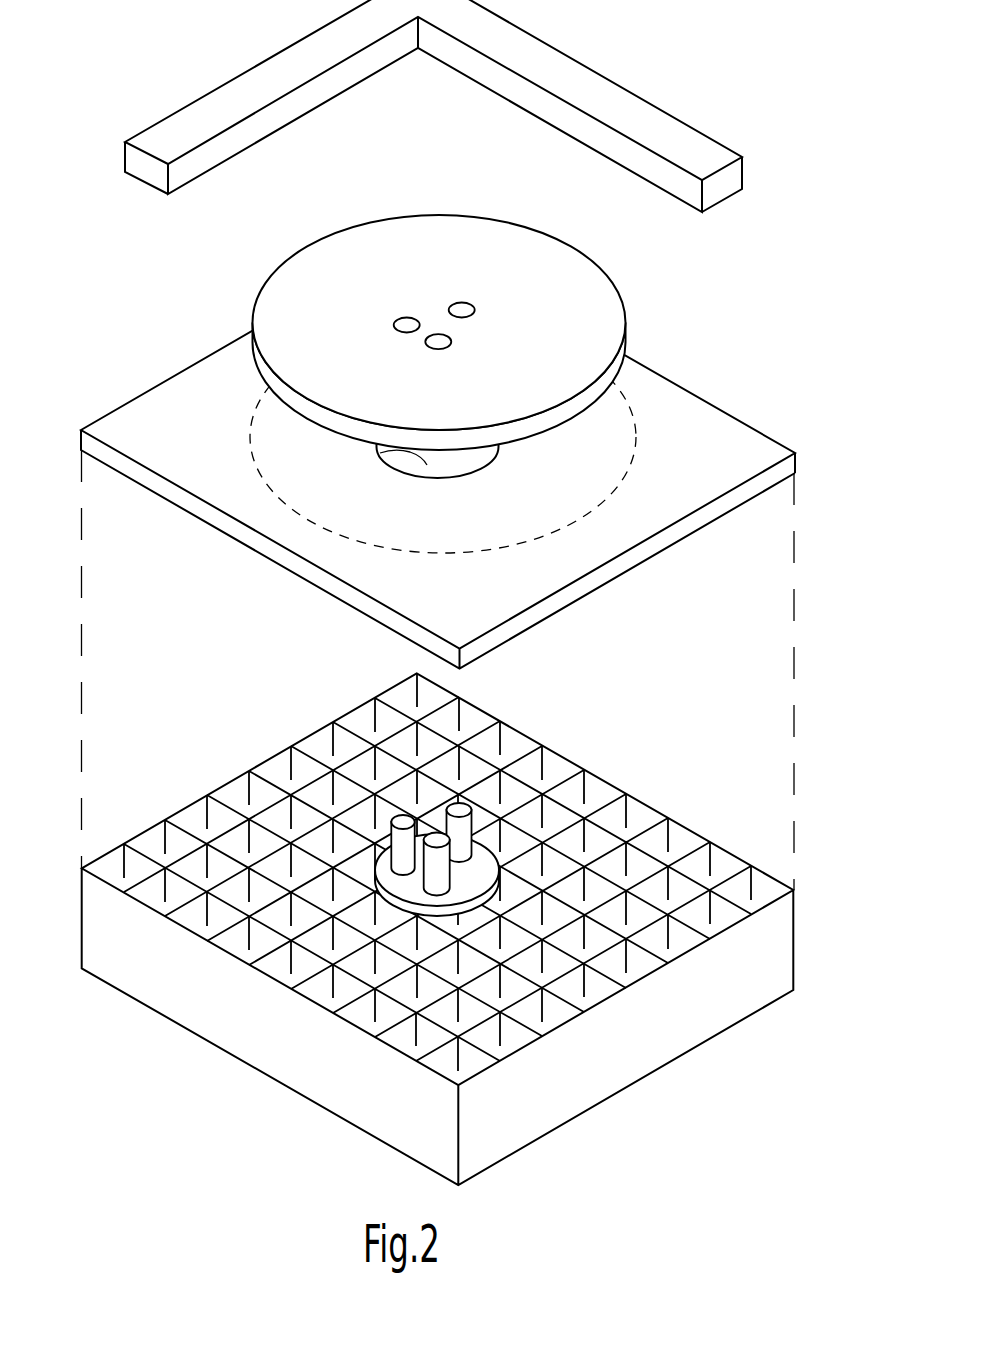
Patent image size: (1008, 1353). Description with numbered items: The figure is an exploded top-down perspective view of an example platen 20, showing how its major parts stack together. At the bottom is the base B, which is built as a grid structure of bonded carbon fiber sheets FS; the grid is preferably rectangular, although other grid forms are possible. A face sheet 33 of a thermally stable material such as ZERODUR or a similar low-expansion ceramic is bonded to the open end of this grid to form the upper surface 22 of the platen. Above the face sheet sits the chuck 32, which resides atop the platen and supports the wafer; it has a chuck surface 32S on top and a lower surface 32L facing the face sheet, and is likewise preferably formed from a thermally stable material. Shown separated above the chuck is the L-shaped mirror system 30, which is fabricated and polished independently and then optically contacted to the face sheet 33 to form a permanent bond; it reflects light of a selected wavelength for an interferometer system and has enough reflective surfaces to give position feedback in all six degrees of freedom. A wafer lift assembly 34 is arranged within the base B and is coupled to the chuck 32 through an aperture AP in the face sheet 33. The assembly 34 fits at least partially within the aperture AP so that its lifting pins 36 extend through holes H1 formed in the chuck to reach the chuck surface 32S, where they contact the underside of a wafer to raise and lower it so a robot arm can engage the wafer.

The platen 20 is at (818, 670).
The upper surface 22 is at (722, 414).
The mirror system 30 is at (580, 63).
The chuck 32 is at (612, 375).
The chuck surface 32S is at (590, 270).
The lower surface 32L is at (258, 382).
The face sheet 33 is at (792, 466).
The wafer lift assembly 34 is at (478, 868).
The lifting pins 36 is at (433, 833).
The aperture AP is at (380, 453).
The base B is at (793, 943).
The carbon fiber sheets FS is at (689, 850).
The holes H1 is at (480, 290).